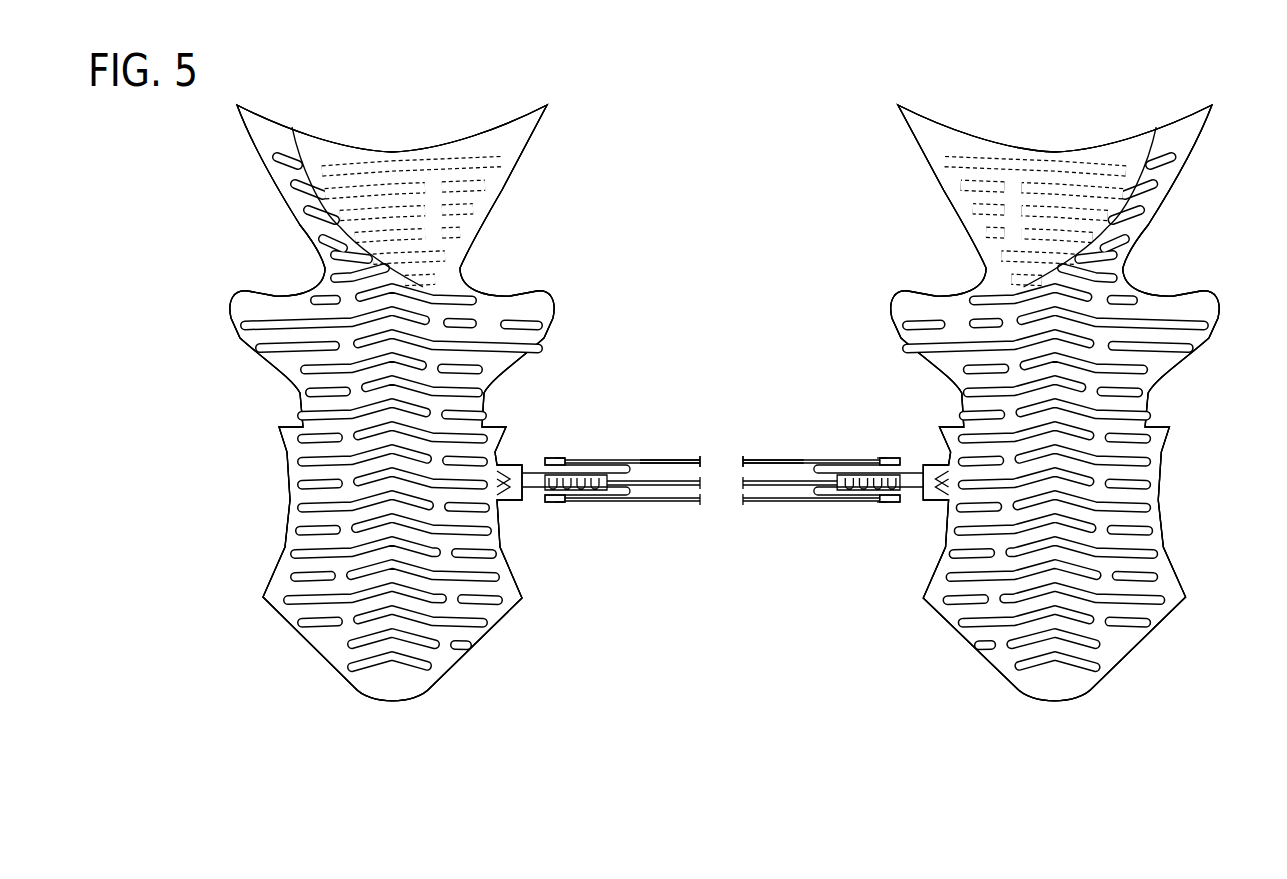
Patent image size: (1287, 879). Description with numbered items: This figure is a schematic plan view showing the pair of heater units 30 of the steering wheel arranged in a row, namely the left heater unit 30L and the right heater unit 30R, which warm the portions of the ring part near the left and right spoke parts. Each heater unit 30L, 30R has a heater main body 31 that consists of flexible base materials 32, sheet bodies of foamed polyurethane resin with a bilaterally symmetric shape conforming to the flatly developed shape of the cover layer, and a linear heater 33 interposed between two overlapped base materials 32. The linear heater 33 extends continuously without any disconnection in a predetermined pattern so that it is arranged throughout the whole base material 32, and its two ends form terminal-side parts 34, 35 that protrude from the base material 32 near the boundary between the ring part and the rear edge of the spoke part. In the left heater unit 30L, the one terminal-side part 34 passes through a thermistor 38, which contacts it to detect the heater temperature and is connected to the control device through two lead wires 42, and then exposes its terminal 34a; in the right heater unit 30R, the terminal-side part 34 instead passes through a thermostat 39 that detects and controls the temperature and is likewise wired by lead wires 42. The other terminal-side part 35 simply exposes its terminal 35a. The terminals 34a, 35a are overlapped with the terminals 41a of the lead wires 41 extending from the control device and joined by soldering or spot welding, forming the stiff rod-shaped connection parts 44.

The heater unit 30 is at (724, 403).
The left heater unit 30L is at (478, 98).
The right heater unit 30R is at (1040, 98).
The heater main body 31 is at (268, 525).
The base material 32 is at (517, 150).
The linear heater 33 is at (310, 632).
The terminal-side part 34 is at (534, 504).
The terminal 34a is at (561, 506).
The terminal-side part 35 is at (537, 457).
The terminal 35a is at (558, 456).
The thermistor 38 is at (601, 491).
The thermostat 39 is at (910, 465).
The lead wire 41 is at (656, 459).
The terminal 41a is at (567, 457).
The lead wire 42 is at (686, 462).
The connection part 44 is at (552, 450).